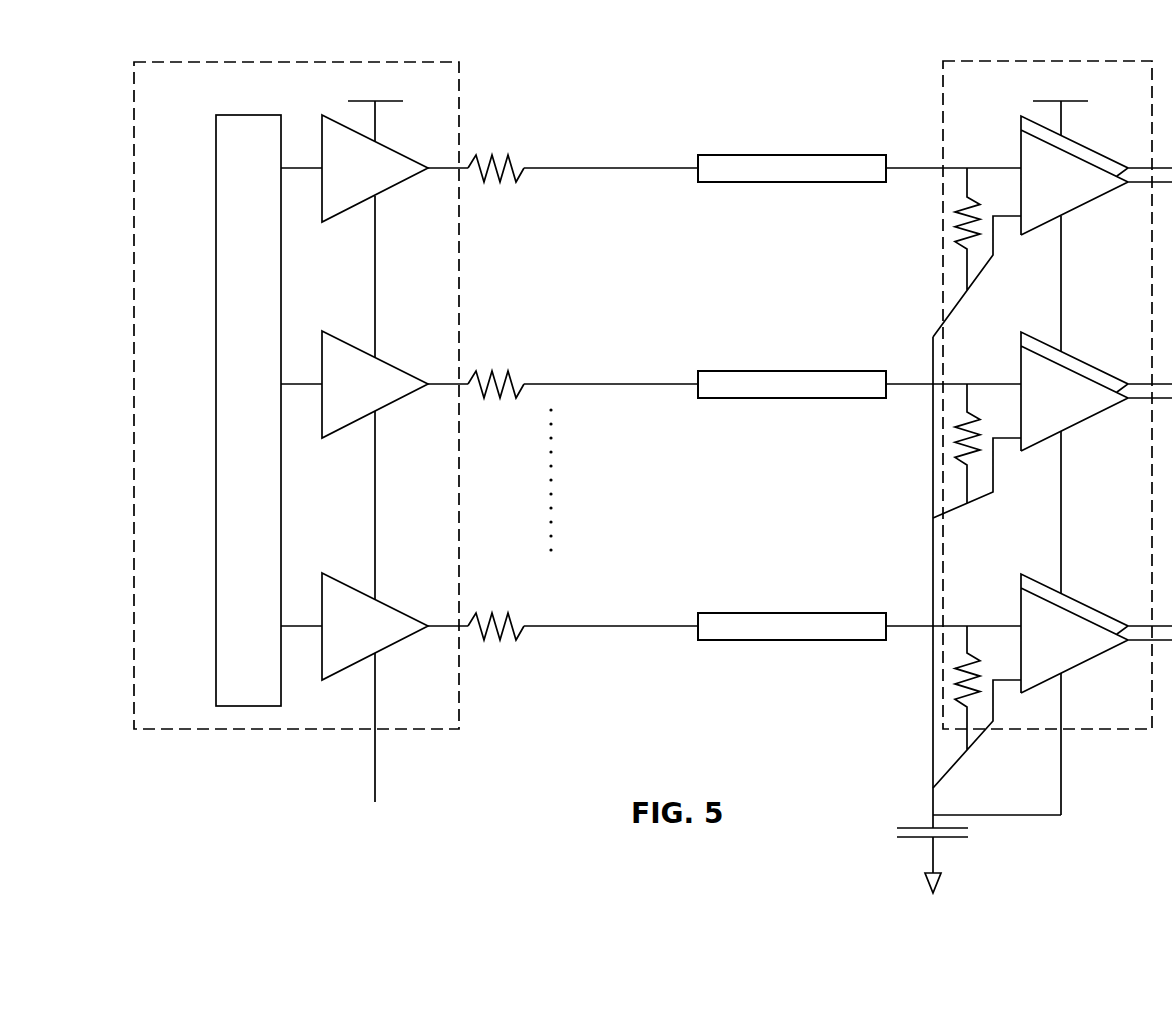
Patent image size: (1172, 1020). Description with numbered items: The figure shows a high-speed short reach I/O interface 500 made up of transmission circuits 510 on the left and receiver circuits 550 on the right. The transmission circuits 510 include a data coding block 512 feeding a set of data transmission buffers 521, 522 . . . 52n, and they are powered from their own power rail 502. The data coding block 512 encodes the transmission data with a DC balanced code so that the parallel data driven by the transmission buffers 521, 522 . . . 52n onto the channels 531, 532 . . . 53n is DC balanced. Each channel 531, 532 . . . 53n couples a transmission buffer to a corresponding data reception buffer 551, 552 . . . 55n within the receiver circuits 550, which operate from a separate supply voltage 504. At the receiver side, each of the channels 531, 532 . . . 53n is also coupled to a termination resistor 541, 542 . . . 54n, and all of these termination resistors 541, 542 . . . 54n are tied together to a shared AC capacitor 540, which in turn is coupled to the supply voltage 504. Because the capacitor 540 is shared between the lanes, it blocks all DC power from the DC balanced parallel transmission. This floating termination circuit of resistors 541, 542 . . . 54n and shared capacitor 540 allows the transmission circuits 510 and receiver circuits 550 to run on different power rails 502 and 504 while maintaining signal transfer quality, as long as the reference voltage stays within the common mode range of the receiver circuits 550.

The high-speed short reach I/O interface 500 is at (628, 67).
The transmission circuits 510 is at (187, 105).
The data coding block 512 is at (248, 410).
The power rail 502 is at (377, 439).
The data transmission buffer 521 is at (375, 168).
The data transmission buffer 522 is at (375, 384).
The data transmission buffer 52n is at (375, 626).
The channel 531 is at (792, 168).
The channel 532 is at (792, 384).
The channel 53n is at (792, 626).
The supply voltage 504 is at (1016, 445).
The receiver circuits 550 is at (1128, 714).
The data reception buffer 551 is at (1096, 175).
The data reception buffer 552 is at (1096, 391).
The data reception buffer 55n is at (1096, 633).
The termination resistor 541 is at (977, 252).
The termination resistor 542 is at (977, 465).
The termination resistor 54n is at (977, 707).
The shared capacitor 540 is at (914, 615).